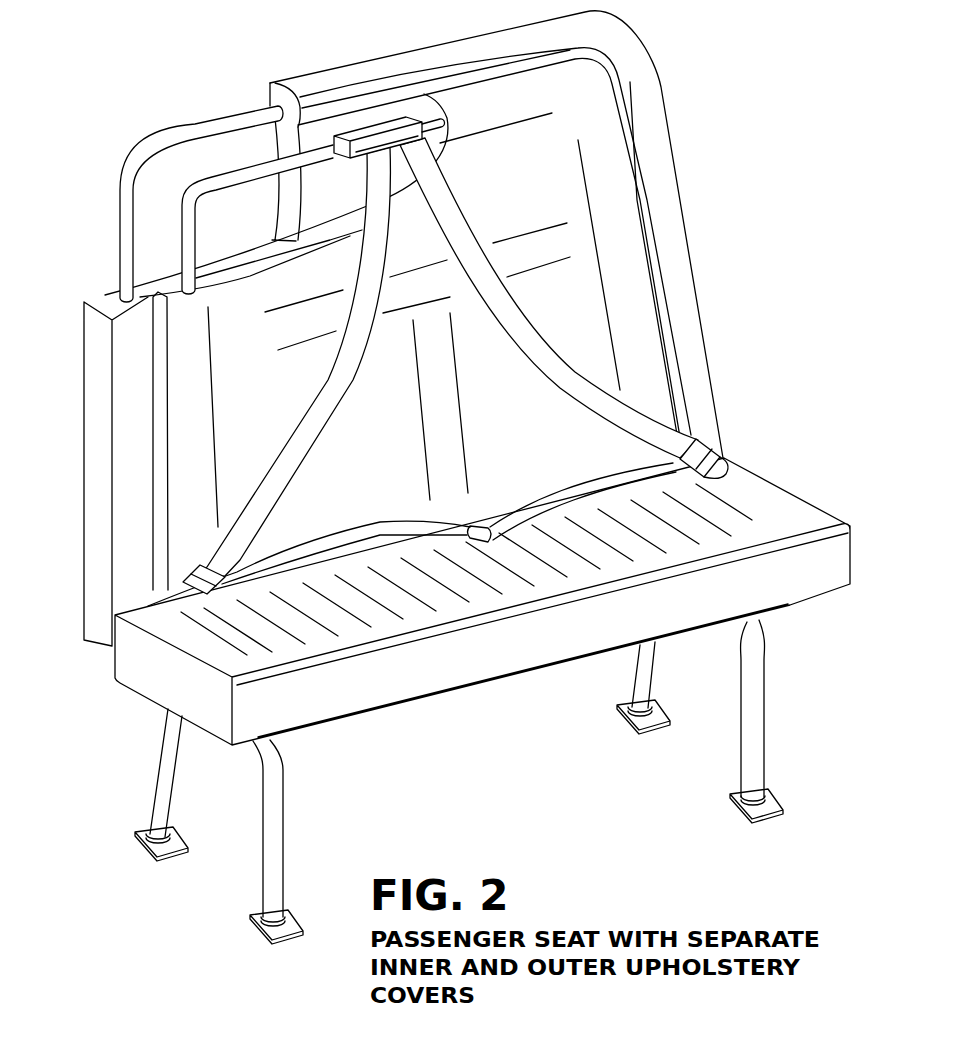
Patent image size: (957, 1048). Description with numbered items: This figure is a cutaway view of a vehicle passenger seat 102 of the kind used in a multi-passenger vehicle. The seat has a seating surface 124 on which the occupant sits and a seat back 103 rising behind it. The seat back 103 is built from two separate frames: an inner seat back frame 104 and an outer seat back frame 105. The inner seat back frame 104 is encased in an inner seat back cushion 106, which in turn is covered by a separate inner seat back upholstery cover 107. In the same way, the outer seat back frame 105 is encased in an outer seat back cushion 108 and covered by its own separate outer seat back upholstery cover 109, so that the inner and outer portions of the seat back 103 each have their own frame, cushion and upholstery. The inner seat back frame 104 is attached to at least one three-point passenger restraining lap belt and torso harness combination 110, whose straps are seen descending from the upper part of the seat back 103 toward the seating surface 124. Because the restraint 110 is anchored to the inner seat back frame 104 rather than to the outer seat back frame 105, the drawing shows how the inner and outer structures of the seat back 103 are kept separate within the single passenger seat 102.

The vehicle passenger seat 102 is at (667, 101).
The seat back 103 is at (566, 172).
The inner seat back frame 104 is at (253, 167).
The outer seat back frame 105 is at (161, 132).
The inner seat back cushion 106 is at (256, 271).
The inner seat back upholstery cover 107 is at (576, 240).
The outer seat back cushion 108 is at (112, 311).
The outer seat back upholstery cover 109 is at (684, 325).
The three-point passenger restraining lap belt and torso harness combination 110 is at (236, 548).
The seating surface 124 is at (664, 533).